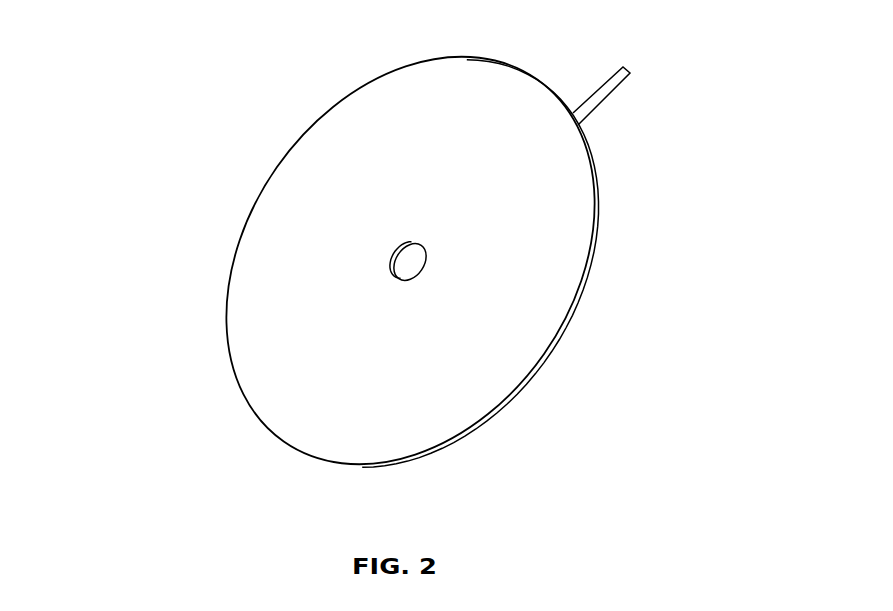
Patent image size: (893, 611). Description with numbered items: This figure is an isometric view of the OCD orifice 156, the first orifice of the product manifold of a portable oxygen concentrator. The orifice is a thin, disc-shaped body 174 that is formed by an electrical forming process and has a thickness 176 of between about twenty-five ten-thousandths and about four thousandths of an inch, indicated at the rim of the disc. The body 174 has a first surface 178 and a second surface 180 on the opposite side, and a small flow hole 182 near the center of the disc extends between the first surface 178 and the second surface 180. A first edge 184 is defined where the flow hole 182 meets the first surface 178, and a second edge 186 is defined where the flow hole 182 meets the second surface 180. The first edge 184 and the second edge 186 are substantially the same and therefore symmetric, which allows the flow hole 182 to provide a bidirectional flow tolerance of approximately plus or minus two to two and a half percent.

The OCD orifice 156 is at (174, 33).
The body 174 is at (243, 328).
The thickness 176 is at (623, 67).
The first surface 178 is at (570, 318).
The second surface 180 is at (572, 281).
The flow hole 182 is at (394, 262).
The first edge 184 is at (424, 272).
The second edge 186 is at (404, 245).